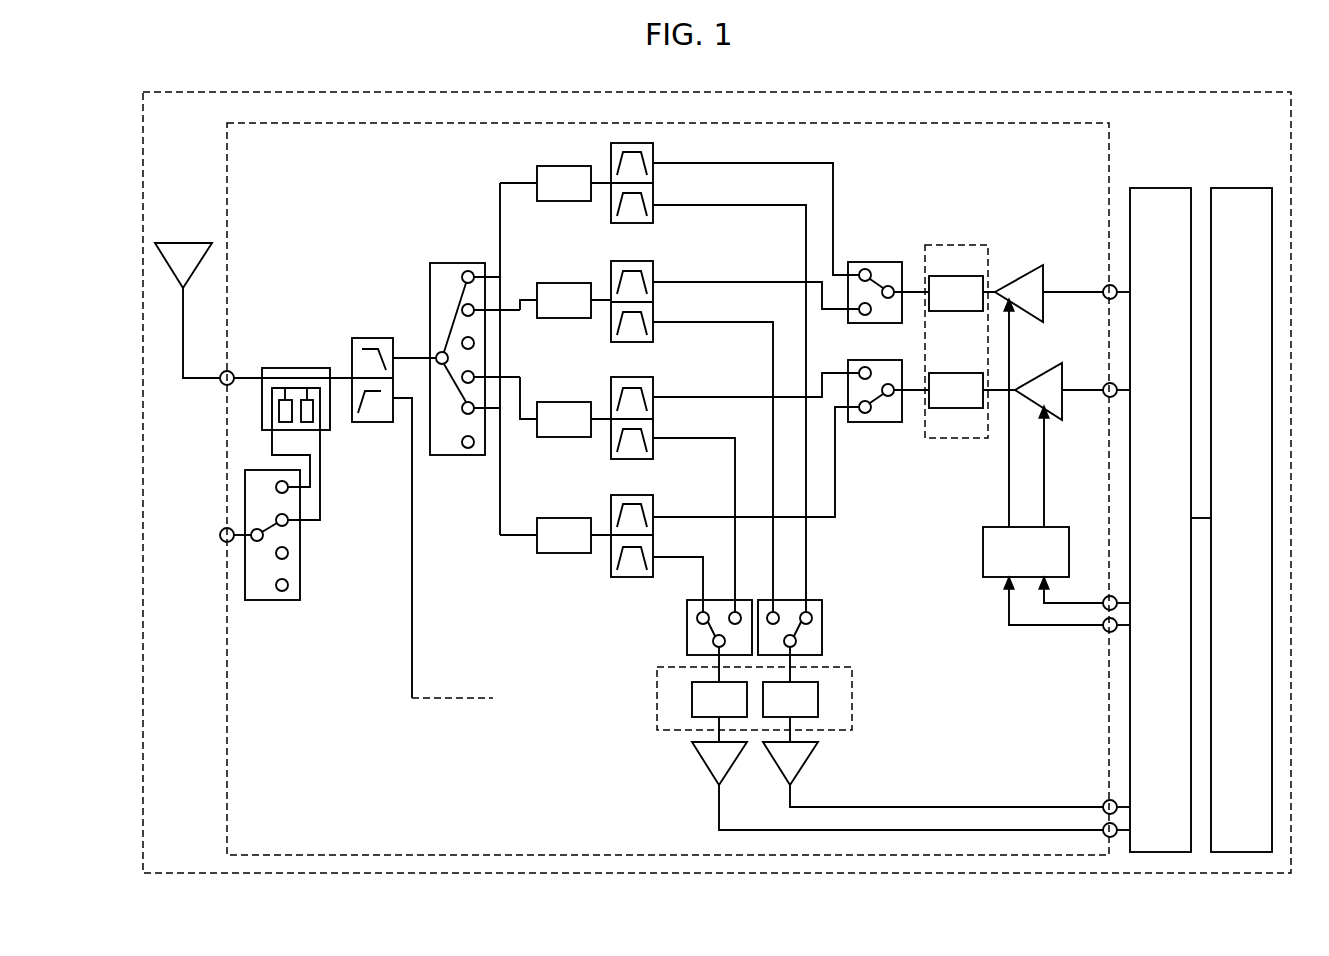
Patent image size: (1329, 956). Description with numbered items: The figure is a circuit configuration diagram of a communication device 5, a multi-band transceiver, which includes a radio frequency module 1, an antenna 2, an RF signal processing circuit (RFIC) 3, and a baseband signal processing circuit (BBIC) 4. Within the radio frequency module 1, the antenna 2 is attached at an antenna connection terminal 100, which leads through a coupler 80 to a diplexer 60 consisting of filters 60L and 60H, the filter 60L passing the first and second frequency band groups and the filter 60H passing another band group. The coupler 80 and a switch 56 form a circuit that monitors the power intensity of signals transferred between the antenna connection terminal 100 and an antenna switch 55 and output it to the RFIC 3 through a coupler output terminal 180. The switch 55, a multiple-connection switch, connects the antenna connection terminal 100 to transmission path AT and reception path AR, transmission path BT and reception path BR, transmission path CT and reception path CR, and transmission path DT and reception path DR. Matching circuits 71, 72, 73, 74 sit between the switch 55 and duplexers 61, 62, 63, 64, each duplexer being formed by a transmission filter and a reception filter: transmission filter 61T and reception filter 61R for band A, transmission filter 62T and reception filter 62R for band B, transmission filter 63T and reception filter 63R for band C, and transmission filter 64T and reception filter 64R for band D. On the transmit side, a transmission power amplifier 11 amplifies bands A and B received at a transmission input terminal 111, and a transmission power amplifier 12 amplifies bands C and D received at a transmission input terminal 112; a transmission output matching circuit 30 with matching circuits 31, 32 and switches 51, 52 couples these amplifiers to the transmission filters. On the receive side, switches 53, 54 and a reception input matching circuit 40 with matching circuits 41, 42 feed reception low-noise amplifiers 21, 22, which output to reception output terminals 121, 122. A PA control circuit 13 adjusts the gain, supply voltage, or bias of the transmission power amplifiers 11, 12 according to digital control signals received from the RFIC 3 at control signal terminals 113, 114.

The radio frequency module 1 is at (1068, 123).
The antenna 2 is at (196, 243).
The RF signal processing circuit (RFIC) 3 is at (1160, 188).
The baseband signal processing circuit (BBIC) 4 is at (1240, 188).
The communication device 5 is at (1250, 92).
The transmission power amplifier 11 is at (1021, 278).
The transmission power amplifier 12 is at (1040, 378).
The PA control circuit 13 is at (988, 527).
The reception low-noise amplifier 21 is at (805, 762).
The reception low-noise amplifier 22 is at (703, 762).
The transmission output matching circuit 30 is at (964, 332).
The matching circuit 31 is at (945, 276).
The matching circuit 32 is at (945, 373).
The reception input matching circuit 40 is at (726, 695).
The matching circuit 41 is at (818, 700).
The matching circuit 42 is at (692, 700).
The switch 51 is at (870, 262).
The switch 52 is at (870, 360).
The switch 53 is at (822, 620).
The switch 54 is at (687, 620).
The switch 55 is at (440, 263).
The switch 56 is at (285, 600).
The diplexer 60 is at (329, 348).
The filter 60L is at (355, 338).
The filter 60H is at (352, 405).
The duplexer 61 is at (687, 177).
The transmission filter 61T is at (657, 152).
The reception filter 61R is at (657, 195).
The duplexer 62 is at (687, 295).
The transmission filter 62T is at (657, 270).
The reception filter 62R is at (657, 315).
The duplexer 63 is at (687, 406).
The transmission filter 63T is at (657, 385).
The reception filter 63R is at (657, 435).
The duplexer 64 is at (672, 525).
The transmission filter 64T is at (653, 505).
The reception filter 64R is at (653, 553).
The matching circuit 71 is at (573, 166).
The matching circuit 72 is at (573, 283).
The matching circuit 73 is at (573, 402).
The matching circuit 74 is at (573, 518).
The coupler 80 is at (290, 368).
The antenna connection terminal 100 is at (220, 383).
The transmission input terminal 111 is at (1106, 300).
The transmission input terminal 112 is at (1106, 398).
The control signal terminal 113 is at (1103, 633).
The control signal terminal 114 is at (1103, 596).
The reception output terminal 121 is at (1103, 800).
The reception output terminal 122 is at (1103, 826).
The coupler output terminal 180 is at (220, 541).
The transmission path AT is at (790, 163).
The reception path AR is at (768, 205).
The transmission path BT is at (760, 282).
The reception path BR is at (752, 322).
The transmission path CT is at (783, 397).
The reception path CR is at (745, 438).
The transmission path DT is at (748, 512).
The reception path DR is at (703, 588).